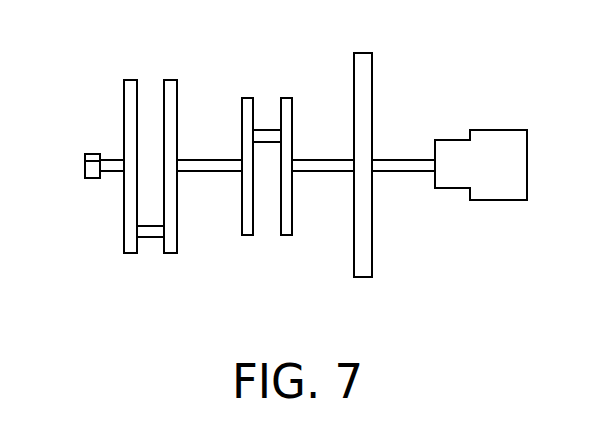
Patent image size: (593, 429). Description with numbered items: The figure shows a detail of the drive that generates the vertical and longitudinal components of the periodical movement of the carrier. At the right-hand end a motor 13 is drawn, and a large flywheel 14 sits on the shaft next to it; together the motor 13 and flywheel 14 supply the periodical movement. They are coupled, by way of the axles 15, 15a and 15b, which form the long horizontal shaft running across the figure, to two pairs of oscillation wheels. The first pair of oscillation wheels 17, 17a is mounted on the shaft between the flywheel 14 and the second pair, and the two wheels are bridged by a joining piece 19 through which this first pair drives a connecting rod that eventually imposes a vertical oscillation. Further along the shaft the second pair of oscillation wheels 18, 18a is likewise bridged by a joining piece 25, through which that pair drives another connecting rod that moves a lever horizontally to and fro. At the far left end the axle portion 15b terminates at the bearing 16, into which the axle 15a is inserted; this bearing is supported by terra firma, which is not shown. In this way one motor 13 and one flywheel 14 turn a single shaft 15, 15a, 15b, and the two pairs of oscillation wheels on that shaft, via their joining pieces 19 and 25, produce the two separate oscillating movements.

The motor 13 is at (497, 145).
The flywheel 14 is at (363, 65).
The axle 15 is at (402, 165).
The axle 15a is at (210, 172).
The axle 15b is at (112, 170).
The bearing 16 is at (93, 157).
The oscillation wheel 17 is at (288, 98).
The oscillation wheel 17a is at (245, 98).
The oscillation wheel 18 is at (168, 85).
The oscillation wheel 18a is at (130, 85).
The joining piece 19 is at (267, 133).
The joining piece 25 is at (150, 237).